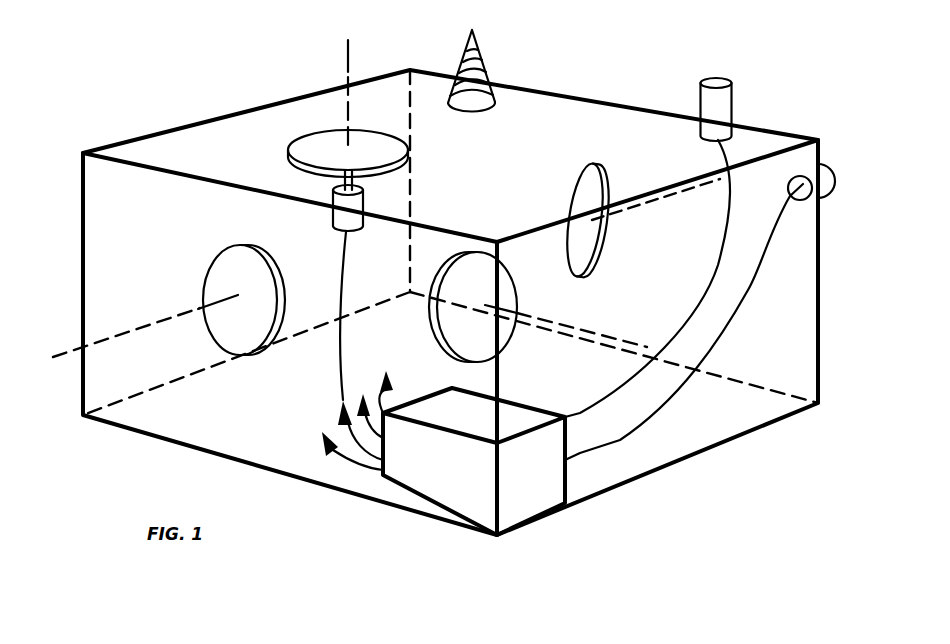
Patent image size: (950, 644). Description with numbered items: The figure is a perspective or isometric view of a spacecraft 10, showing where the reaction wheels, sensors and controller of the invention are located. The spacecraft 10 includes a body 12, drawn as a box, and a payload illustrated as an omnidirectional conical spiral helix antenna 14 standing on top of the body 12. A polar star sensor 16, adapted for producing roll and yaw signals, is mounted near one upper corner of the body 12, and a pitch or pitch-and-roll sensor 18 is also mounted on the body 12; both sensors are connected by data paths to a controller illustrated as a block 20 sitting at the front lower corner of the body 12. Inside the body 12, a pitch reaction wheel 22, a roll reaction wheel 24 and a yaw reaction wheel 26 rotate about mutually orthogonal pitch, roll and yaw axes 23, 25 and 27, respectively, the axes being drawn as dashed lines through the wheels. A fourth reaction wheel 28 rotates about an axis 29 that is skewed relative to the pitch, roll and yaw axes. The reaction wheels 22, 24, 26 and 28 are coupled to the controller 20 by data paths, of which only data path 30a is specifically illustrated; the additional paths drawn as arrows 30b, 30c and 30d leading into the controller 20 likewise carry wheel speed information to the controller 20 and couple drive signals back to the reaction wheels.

The spacecraft 10 is at (131, 75).
The body 12 is at (91, 183).
The omnidirectional conical spiral helix antenna 14 is at (484, 46).
The polar star sensor 16 is at (700, 93).
The pitch or pitch-and-roll sensor 18 is at (827, 163).
The controller 20 is at (520, 400).
The pitch reaction wheel 22 is at (315, 133).
The pitch axis 23 is at (348, 53).
The roll reaction wheel 24 is at (508, 282).
The roll axis 25 is at (593, 332).
The yaw reaction wheel 26 is at (220, 273).
The yaw axis 27 is at (62, 348).
The fourth reaction wheel 28 is at (568, 172).
The skewed axis 29 is at (672, 195).
The data path 30a is at (338, 397).
The airflow 30b is at (333, 466).
The airflow 30c is at (390, 392).
The airflow 30d is at (365, 392).